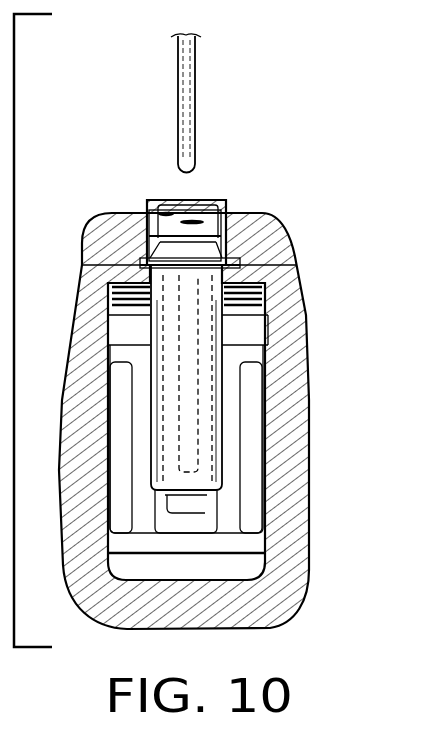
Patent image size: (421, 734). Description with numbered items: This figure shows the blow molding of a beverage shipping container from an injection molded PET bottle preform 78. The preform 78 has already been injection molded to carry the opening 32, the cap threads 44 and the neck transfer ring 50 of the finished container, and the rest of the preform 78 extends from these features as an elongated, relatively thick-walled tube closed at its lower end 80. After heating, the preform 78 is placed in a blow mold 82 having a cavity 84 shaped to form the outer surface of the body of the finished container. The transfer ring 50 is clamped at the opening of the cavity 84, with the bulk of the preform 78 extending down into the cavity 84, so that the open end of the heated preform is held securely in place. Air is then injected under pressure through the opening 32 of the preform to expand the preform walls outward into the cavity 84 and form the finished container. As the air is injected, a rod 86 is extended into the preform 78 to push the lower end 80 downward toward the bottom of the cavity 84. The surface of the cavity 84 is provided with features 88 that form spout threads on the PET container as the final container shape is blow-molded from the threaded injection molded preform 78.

The rod 86 is at (196, 100).
The opening 32 is at (200, 205).
The cap threads 44 is at (214, 213).
The neck transfer ring 50 is at (234, 262).
The features 88 is at (262, 290).
The cavity 84 is at (262, 330).
The bottle preform 78 is at (226, 382).
The lower end 80 is at (190, 495).
The blow mold 82 is at (52, 247).